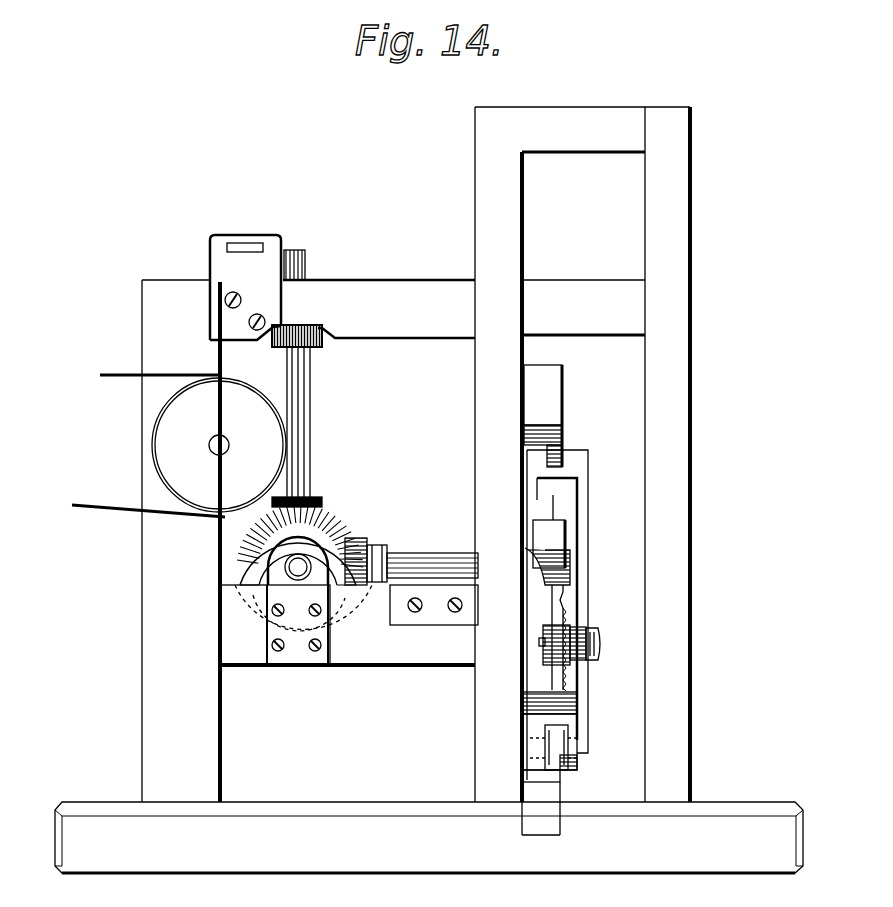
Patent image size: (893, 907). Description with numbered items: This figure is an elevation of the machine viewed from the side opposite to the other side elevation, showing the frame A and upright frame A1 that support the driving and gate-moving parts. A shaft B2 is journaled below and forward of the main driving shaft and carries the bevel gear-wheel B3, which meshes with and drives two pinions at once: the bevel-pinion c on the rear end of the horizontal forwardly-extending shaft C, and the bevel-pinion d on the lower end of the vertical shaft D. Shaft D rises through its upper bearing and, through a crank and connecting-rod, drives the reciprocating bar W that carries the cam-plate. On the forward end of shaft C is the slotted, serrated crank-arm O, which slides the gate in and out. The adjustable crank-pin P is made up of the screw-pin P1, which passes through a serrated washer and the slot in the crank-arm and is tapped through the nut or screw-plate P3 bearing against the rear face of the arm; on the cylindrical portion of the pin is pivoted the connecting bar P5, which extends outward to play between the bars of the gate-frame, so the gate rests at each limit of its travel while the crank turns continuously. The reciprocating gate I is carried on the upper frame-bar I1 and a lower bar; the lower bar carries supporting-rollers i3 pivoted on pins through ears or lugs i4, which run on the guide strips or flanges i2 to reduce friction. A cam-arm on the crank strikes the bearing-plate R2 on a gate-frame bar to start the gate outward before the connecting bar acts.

The frame A is at (429, 576).
The upright frame A1 is at (582, 471).
The reciprocating bar W is at (237, 246).
The vertical shaft D is at (312, 442).
The bevel-pinion d is at (319, 502).
The bevel gear-wheel B3 is at (340, 524).
The shaft B2 is at (292, 574).
The bevel-pinion c is at (363, 546).
The horizontal forwardly-extending shaft C is at (445, 558).
The upper frame-bar I1 is at (562, 447).
The bearing-plate R2 is at (560, 516).
The crank-arm O is at (557, 613).
The nut or screw-plate P3 is at (544, 632).
The screw-pin P1 is at (540, 644).
The connecting bar P5 is at (582, 632).
The adjustable crank-pin P is at (600, 645).
The reciprocating gate I is at (550, 731).
The supporting-rollers i3 is at (565, 745).
The ears or lugs i4 is at (568, 762).
The guide strips or flanges i2 is at (553, 774).